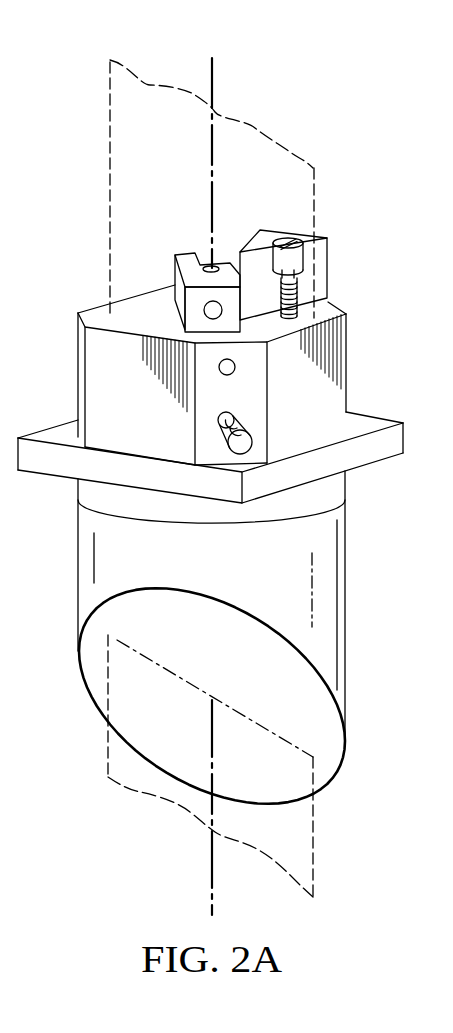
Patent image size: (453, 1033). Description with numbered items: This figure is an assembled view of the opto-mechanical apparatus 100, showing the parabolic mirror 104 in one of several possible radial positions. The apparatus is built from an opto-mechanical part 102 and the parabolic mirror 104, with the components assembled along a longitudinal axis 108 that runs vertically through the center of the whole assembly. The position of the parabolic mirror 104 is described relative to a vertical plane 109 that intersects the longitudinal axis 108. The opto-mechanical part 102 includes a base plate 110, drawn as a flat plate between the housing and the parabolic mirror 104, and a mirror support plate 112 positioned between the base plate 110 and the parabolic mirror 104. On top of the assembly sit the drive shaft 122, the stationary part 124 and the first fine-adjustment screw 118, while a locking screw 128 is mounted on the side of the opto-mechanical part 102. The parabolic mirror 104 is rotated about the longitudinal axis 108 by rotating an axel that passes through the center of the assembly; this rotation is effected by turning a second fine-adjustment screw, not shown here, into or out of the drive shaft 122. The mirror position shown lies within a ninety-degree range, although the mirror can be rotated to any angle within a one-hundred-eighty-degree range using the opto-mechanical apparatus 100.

The opto-mechanical apparatus 100 is at (44, 114).
The opto-mechanical part 102 is at (82, 301).
The parabolic mirror 104 is at (85, 563).
The longitudinal axis 108 is at (211, 893).
The vertical plane 109 is at (316, 838).
The base plate 110 is at (46, 419).
The mirror support plate 112 is at (242, 533).
The first fine-adjustment screw 118 is at (290, 233).
The drive shaft 122 is at (186, 254).
The stationary part 124 is at (329, 272).
The locking screw 128 is at (250, 446).